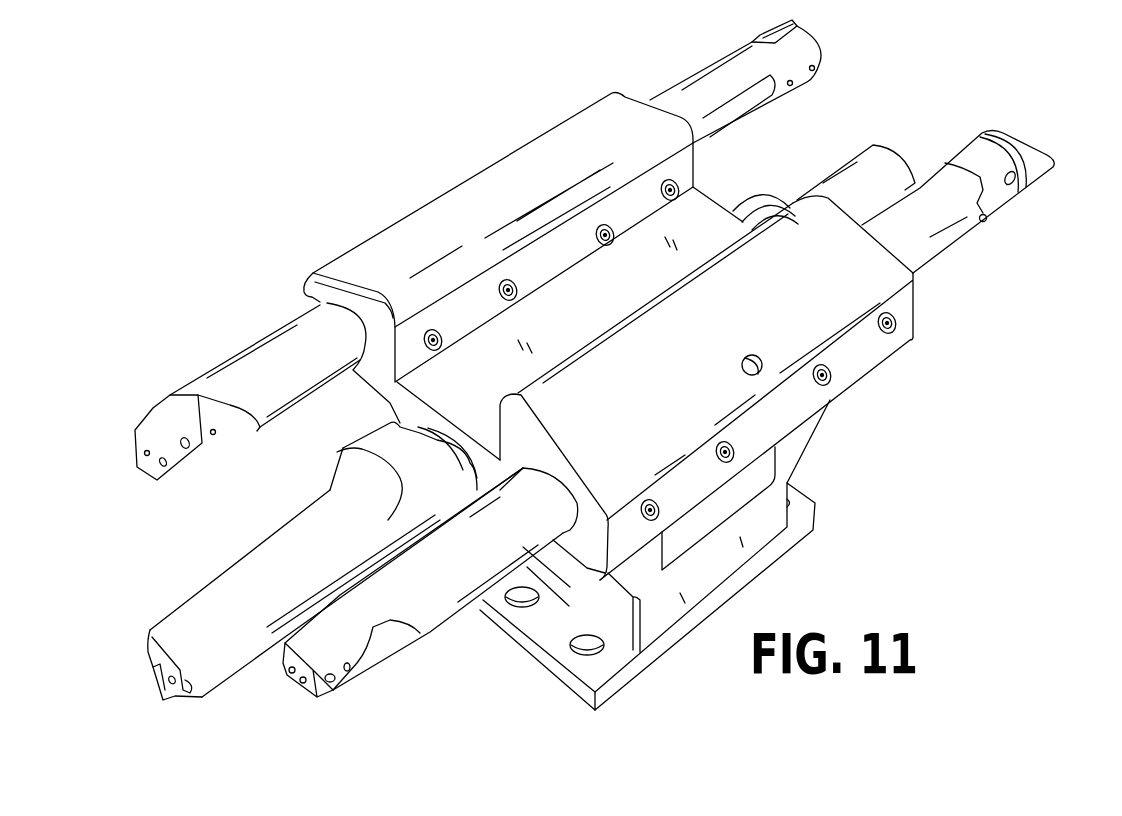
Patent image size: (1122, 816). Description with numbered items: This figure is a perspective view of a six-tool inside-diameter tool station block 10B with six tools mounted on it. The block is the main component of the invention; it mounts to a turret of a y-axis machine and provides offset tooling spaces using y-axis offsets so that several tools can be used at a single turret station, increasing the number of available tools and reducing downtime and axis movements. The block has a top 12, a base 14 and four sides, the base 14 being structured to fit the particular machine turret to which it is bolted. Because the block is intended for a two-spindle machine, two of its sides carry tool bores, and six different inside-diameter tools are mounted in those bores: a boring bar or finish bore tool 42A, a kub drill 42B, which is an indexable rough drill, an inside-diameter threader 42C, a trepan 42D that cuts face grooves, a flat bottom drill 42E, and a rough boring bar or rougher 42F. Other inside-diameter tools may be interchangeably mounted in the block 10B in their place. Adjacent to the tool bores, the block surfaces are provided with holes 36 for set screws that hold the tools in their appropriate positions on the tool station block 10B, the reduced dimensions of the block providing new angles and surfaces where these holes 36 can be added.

The I.D. tool station block 10B is at (458, 150).
The top 12 is at (868, 263).
The base 14 is at (628, 688).
The holes for set screws 36 is at (683, 186).
The boring bar 42A is at (236, 433).
The kub drill 42B is at (218, 677).
The I.D. threader 42C is at (371, 652).
The trepan 42D is at (803, 86).
The flat bottom drill 42E is at (888, 162).
The rough boring bar 42F is at (963, 228).